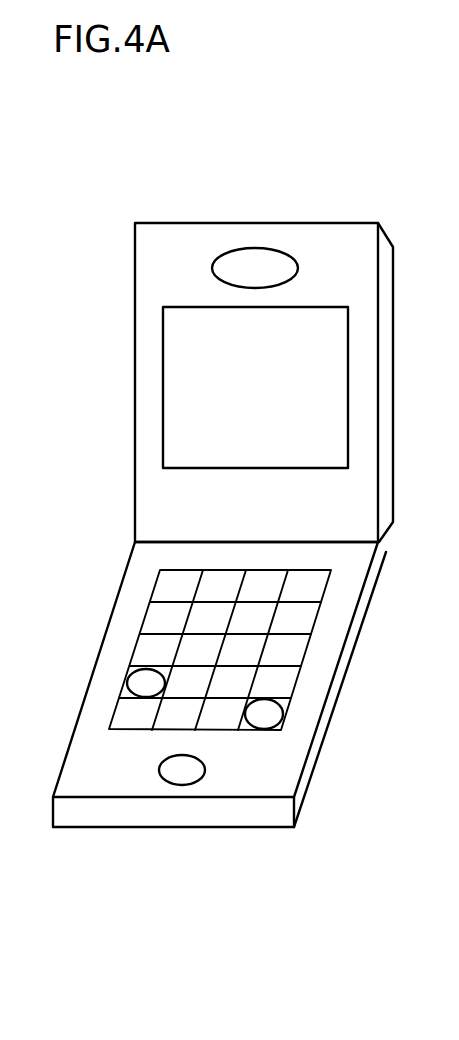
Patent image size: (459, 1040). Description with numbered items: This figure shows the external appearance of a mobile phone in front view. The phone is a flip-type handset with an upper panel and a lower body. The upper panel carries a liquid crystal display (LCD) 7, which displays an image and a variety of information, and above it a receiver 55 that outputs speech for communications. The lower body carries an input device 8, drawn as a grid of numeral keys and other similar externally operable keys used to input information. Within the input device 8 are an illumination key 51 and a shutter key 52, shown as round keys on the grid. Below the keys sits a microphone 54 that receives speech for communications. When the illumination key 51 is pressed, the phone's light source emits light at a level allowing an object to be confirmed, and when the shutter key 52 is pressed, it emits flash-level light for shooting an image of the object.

The liquid crystal display 7 is at (163, 365).
The input device 8 is at (134, 648).
The illumination key 51 is at (127, 688).
The shutter key 52 is at (282, 728).
The microphone 54 is at (178, 785).
The receiver 55 is at (255, 247).